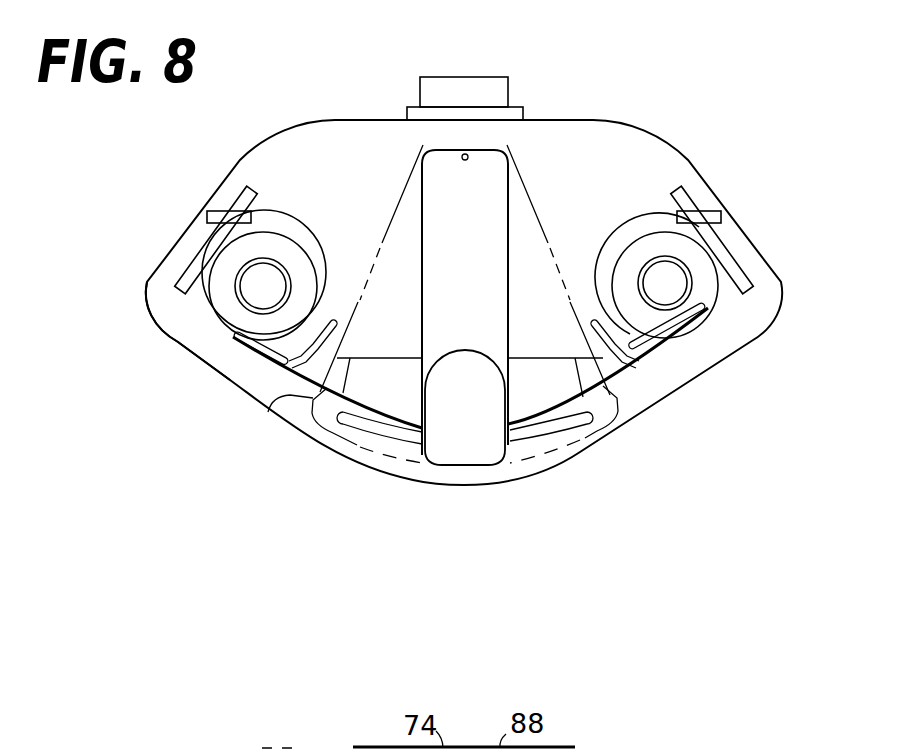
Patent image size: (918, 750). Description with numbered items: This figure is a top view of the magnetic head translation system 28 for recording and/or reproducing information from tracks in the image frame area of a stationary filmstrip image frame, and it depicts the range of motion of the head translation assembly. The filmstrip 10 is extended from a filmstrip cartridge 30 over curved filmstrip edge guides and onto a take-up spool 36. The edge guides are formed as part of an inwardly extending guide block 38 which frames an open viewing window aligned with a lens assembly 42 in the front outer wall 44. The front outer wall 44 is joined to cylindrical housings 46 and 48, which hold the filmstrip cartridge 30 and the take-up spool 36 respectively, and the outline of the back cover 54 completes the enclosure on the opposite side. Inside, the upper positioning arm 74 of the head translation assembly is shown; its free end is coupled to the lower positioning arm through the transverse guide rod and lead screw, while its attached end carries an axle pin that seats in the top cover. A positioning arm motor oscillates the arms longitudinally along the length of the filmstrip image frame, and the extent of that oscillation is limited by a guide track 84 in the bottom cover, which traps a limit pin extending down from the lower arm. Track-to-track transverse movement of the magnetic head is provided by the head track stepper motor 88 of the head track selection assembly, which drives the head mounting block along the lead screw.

The filmstrip 10 is at (653, 362).
The magnetic head translation system 28 is at (793, 204).
The filmstrip cartridge 30 is at (222, 330).
The take-up spool 36 is at (704, 310).
The guide block 38 is at (283, 403).
The lens assembly 42 is at (420, 78).
The front outer wall 44 is at (231, 171).
The cylindrical housing 46 is at (207, 220).
The cylindrical housing 48 is at (703, 210).
The back cover 54 is at (180, 348).
The upper positioning arm 74 is at (508, 153).
The guide track 84 is at (545, 440).
The head track stepper motor 88 is at (445, 461).